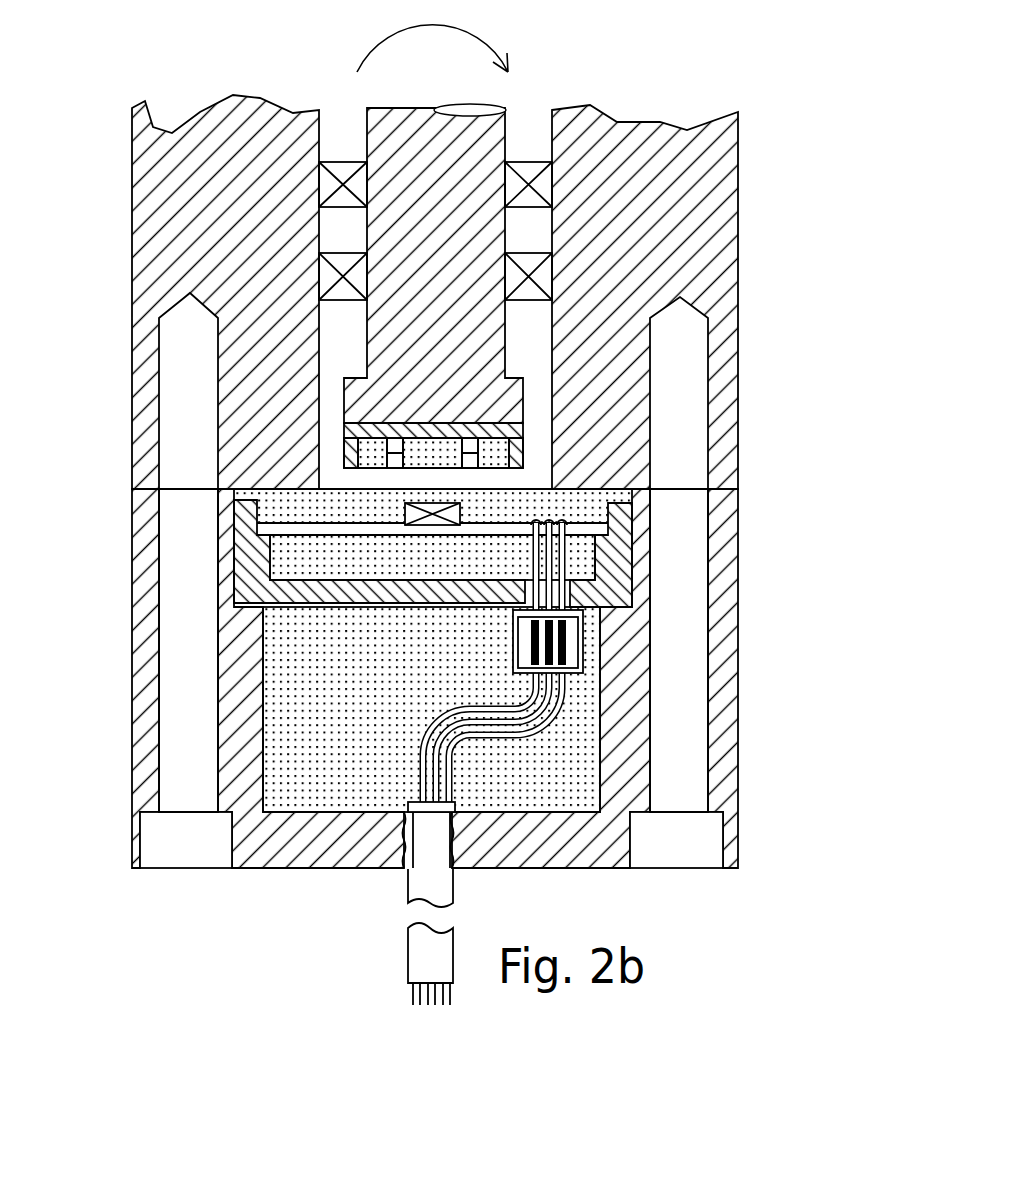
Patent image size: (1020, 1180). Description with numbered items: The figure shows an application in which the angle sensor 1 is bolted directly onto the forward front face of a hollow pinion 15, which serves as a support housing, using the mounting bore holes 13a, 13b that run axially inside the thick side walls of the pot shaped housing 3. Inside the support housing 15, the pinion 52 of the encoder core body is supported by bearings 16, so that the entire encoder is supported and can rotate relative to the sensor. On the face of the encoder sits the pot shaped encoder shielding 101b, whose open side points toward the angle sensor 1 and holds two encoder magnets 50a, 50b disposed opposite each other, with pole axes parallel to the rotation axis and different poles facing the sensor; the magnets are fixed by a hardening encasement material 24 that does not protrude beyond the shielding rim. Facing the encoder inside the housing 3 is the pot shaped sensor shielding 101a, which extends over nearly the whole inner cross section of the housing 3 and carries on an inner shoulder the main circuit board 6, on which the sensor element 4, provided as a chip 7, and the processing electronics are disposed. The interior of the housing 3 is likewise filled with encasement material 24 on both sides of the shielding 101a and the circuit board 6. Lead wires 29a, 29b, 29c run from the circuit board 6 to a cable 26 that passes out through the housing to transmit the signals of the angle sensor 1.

The angle sensor 1 is at (430, 513).
The pot shaped housing 3 is at (132, 693).
The hollow pinion 15 is at (718, 242).
The mounting bore hole 13a is at (188, 622).
The mounting bore hole 13b is at (690, 592).
The pinion 52 is at (410, 130).
The bearings 16 is at (525, 278).
The encoder magnet 50a is at (367, 438).
The encoder magnet 50b is at (493, 442).
The encoder shielding 101b is at (590, 389).
The sensor shielding 101a is at (240, 558).
The encasement material 24 is at (497, 458).
The main circuit board 6 is at (597, 530).
The sensor element 4 is at (250, 464).
The chip 7 is at (425, 508).
The wire bundle lower section 29a is at (415, 768).
The wire bundle bend 29b is at (440, 718).
The wire bundle upper section with terminal block 29c is at (475, 740).
The cable 26 is at (425, 890).